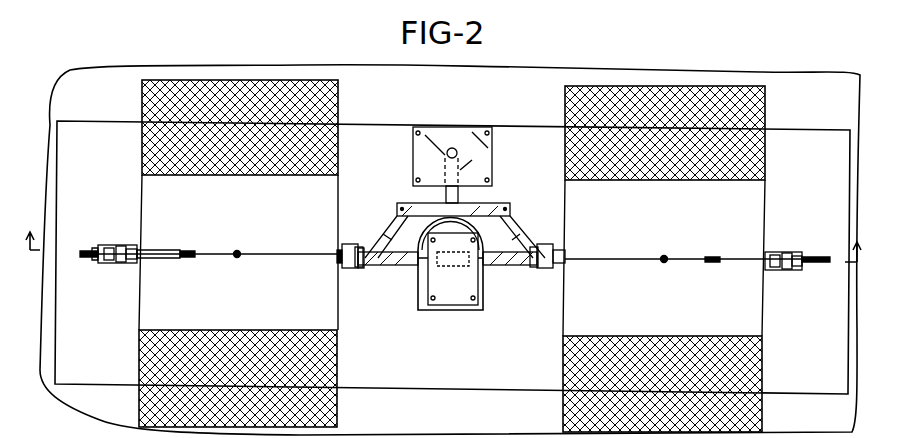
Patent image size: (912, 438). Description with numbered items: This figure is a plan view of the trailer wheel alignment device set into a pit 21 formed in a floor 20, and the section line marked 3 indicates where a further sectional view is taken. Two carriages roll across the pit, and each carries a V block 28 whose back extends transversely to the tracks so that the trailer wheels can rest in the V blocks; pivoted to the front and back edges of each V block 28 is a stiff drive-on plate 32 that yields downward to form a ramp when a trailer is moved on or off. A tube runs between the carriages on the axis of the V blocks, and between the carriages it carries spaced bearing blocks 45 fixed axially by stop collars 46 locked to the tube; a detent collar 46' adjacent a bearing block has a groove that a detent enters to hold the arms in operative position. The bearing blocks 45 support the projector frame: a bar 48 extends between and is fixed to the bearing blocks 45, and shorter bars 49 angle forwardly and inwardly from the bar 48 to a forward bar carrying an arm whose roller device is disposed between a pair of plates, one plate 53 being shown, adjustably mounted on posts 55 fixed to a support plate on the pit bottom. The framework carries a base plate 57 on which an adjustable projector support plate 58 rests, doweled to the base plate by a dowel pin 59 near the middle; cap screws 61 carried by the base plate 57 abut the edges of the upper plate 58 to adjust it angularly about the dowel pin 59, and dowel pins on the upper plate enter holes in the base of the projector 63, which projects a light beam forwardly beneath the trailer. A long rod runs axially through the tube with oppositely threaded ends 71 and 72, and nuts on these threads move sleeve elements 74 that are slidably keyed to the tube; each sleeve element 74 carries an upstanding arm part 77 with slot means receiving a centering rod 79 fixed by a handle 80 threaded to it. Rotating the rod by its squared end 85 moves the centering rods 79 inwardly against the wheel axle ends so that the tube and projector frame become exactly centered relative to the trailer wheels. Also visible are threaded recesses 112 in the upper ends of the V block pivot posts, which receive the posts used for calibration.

The floor 20 is at (530, 60).
The pit 21 is at (472, 384).
The section line 3- 3 is at (442, 236).
The V block 28 is at (260, 318).
The drive-on plate 32 is at (290, 175).
The bearing block 45 is at (362, 268).
The stop collar 46 is at (451, 243).
The detent collar 46' is at (332, 281).
The bar 48 is at (492, 267).
The shorter bar 49 is at (396, 212).
The plate 53 is at (490, 162).
The post 55 is at (414, 168).
The base plate 57 is at (460, 312).
The projector support plate 58 is at (426, 300).
The dowel pin 59 is at (453, 262).
The cap screw 61 is at (414, 220).
The projector 63 is at (452, 300).
The threaded end 71 is at (94, 250).
The threaded end 72 is at (812, 266).
The sleeve element 74 is at (112, 245).
The arm part 77 is at (128, 247).
The centering rod 79 is at (158, 252).
The handle 80 is at (110, 264).
The squared end 85 is at (90, 256).
The threaded recess 112 is at (239, 253).